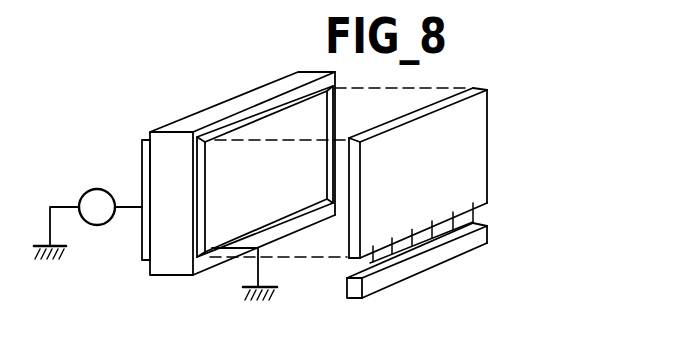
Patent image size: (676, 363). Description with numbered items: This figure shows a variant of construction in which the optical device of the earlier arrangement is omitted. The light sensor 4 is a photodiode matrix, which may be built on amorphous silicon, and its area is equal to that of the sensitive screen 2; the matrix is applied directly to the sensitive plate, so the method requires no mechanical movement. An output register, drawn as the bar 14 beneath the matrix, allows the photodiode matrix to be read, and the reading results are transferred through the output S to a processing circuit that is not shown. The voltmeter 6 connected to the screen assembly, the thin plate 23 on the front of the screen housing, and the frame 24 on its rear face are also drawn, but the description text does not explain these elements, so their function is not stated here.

The sensitive screen 2 is at (180, 260).
The light sensor 4 is at (473, 147).
The voltmeter 6 is at (92, 180).
The bar 14 is at (471, 245).
The electrode plate 23 is at (145, 157).
The frame 24 is at (252, 128).
The output S is at (496, 234).